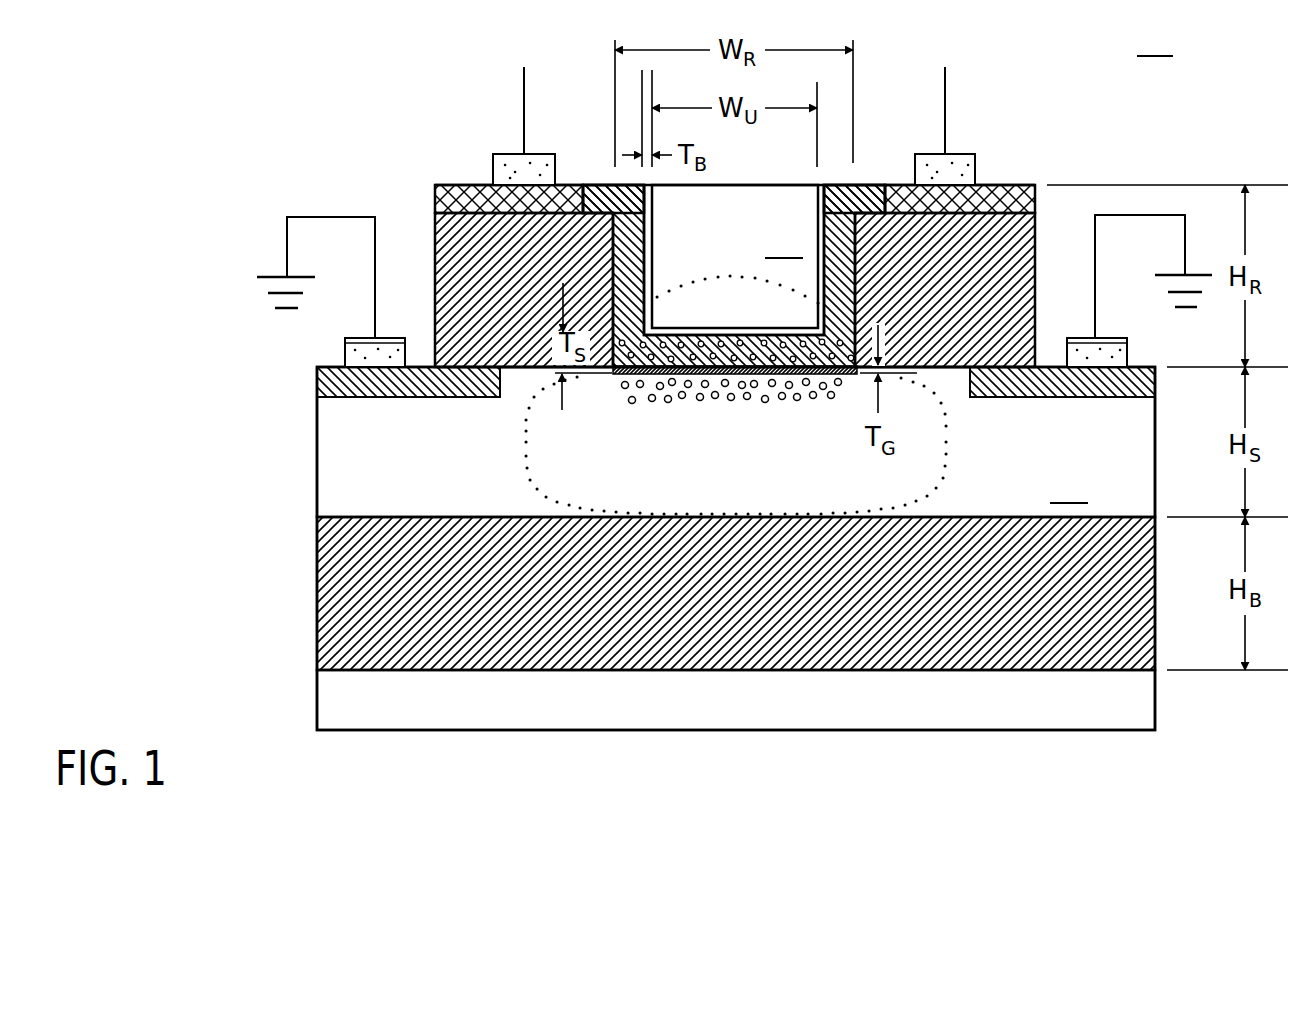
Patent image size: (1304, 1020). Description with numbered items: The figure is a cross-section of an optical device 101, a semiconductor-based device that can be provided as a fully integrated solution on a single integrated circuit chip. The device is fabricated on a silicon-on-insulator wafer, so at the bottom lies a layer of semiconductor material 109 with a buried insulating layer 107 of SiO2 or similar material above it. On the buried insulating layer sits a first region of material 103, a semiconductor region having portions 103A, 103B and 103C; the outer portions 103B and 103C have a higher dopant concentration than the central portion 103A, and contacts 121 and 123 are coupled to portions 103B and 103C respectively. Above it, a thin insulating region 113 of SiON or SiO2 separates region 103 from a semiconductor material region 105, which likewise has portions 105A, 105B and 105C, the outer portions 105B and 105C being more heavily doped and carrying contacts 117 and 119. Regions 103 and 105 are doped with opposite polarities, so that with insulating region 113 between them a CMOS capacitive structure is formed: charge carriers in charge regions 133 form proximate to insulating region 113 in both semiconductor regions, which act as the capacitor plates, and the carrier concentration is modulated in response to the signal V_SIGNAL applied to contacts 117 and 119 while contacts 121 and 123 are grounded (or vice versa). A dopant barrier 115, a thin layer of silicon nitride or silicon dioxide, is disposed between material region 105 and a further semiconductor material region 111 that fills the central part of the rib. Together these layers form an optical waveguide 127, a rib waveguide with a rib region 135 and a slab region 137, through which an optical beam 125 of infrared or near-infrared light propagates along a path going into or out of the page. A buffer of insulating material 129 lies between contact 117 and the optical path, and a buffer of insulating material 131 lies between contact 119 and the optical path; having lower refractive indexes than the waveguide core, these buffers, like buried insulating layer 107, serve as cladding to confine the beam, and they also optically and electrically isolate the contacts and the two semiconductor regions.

The optical device 101 is at (1162, 43).
The first region of material 103 is at (328, 487).
The portion of semiconductor material region 103A is at (1153, 487).
The portion of semiconductor material region 103B is at (403, 396).
The portion of semiconductor material region 103C is at (1047, 398).
The semiconductor material region 105 is at (753, 164).
The portion of semiconductor material region 105A is at (857, 183).
The portion of semiconductor material region 105B is at (487, 182).
The portion of semiconductor material region 105C is at (1027, 183).
The buried insulating layer 107 is at (1153, 575).
The layer of semiconductor material 109 is at (1155, 712).
The semiconductor material region 111 is at (757, 198).
The insulating region 113 is at (612, 374).
The dopant barrier 115 is at (650, 224).
The contact 117 is at (532, 157).
The contact 119 is at (952, 155).
The contact 121 is at (345, 353).
The contact 123 is at (1127, 347).
The optical beam 125 is at (940, 458).
The optical waveguide 127 is at (860, 121).
The buffer of insulating material 129 is at (435, 263).
The buffer of insulating material 131 is at (1065, 258).
The charge regions 133 is at (690, 328).
The rib region 135 is at (790, 243).
The slab region 137 is at (1075, 490).